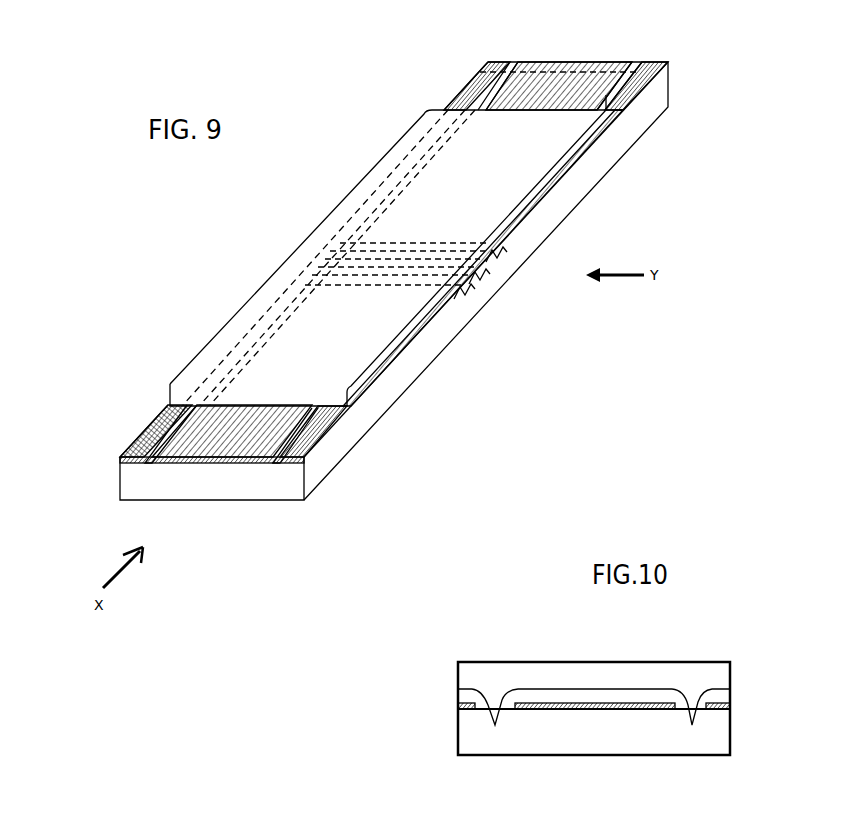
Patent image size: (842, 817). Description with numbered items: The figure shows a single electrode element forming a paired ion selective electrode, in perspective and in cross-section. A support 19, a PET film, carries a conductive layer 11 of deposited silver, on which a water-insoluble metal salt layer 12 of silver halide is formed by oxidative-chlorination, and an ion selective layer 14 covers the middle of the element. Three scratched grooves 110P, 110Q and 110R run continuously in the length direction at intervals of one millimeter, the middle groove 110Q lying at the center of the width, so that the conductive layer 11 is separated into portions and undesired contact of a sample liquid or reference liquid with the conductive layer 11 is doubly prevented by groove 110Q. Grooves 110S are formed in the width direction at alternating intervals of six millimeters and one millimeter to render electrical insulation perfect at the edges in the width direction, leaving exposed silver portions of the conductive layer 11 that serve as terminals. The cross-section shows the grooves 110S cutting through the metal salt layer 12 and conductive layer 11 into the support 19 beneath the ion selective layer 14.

In FIG. 9, the conductive layer 11 is at (572, 62).
In FIG. 10, the conductive layer 11 is at (633, 700).
In FIG. 9, the water-insoluble metal salt layer 12 is at (580, 157).
In FIG. 10, the water-insoluble metal salt layer 12 is at (553, 693).
In FIG. 9, the ion selective layer 14 is at (548, 182).
In FIG. 10, the ion selective layer 14 is at (718, 678).
In FIG. 9, the support 19 is at (315, 468).
In FIG. 10, the support 19 is at (713, 737).
In FIG. 9, the groove 110S is at (512, 60).
In FIG. 10, the groove 110S is at (497, 707).
In FIG. 9, the groove 110P is at (502, 251).
In FIG. 9, the groove 110Q is at (488, 273).
In FIG. 9, the groove 110R is at (470, 292).